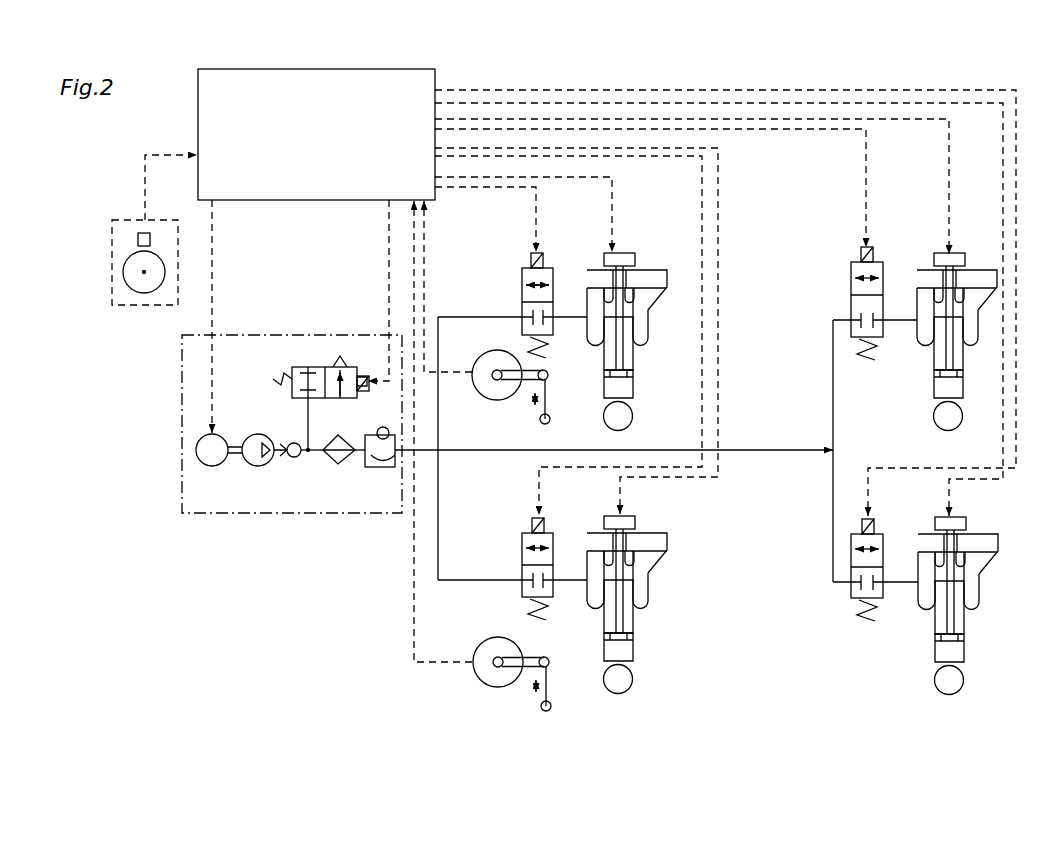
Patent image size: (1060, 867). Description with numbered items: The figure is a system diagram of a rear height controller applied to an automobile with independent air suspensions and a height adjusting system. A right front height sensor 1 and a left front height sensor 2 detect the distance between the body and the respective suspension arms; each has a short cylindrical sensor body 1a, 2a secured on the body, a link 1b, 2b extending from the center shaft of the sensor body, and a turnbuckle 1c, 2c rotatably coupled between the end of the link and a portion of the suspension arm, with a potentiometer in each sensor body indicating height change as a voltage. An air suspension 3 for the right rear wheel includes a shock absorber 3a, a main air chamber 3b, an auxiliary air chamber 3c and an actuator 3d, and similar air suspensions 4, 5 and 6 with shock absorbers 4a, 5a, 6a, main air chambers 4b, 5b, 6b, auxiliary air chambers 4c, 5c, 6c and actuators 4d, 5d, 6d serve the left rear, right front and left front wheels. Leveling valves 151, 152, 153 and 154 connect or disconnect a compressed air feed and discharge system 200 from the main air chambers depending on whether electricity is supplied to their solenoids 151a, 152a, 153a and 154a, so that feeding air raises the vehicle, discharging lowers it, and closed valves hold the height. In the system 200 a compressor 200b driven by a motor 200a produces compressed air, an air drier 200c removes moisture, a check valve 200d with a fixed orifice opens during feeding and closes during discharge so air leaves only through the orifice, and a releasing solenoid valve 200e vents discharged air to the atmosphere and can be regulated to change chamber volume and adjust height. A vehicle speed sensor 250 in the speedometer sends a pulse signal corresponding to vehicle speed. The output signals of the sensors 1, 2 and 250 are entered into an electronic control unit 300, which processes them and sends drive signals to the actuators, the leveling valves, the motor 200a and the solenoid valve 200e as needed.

The electronic control unit 300 is at (366, 72).
The vehicle speed sensor 250 is at (127, 222).
The compressed air feed and discharge system 200 is at (292, 448).
The motor 200a is at (212, 466).
The compressor 200b is at (258, 466).
The air drier 200c is at (330, 462).
The check valve 200d is at (392, 478).
The releasing solenoid valve 200e is at (302, 367).
The right front height sensor 1 is at (514, 385).
The sensor body 1a is at (480, 362).
The link 1b is at (509, 368).
The turnbuckle 1c is at (548, 401).
The left front height sensor 2 is at (523, 671).
The sensor body 2a is at (500, 644).
The link 2b is at (533, 658).
The turnbuckle 2c is at (552, 688).
The leveling valve 151 is at (861, 301).
The solenoid 151a is at (893, 266).
The leveling valve 152 is at (876, 535).
The solenoid 152a is at (862, 520).
The leveling valve 153 is at (534, 301).
The solenoid 153a is at (563, 265).
The leveling valve 154 is at (537, 564).
The solenoid 154a is at (562, 531).
The air suspension 3 is at (973, 336).
The shock absorber 3a is at (936, 388).
The main air chamber 3b is at (986, 332).
The auxiliary air chamber 3c is at (998, 280).
The actuator 3d is at (968, 262).
The air suspension 4 is at (969, 602).
The shock absorber 4a is at (969, 650).
The main air chamber 4b is at (987, 596).
The auxiliary air chamber 4c is at (998, 548).
The actuator 4d is at (969, 524).
The air suspension 5 is at (644, 337).
The shock absorber 5a is at (634, 381).
The main air chamber 5b is at (650, 313).
The auxiliary air chamber 5c is at (667, 280).
The actuator 5d is at (636, 259).
The air suspension 6 is at (649, 601).
The shock absorber 6a is at (634, 655).
The main air chamber 6b is at (652, 585).
The auxiliary air chamber 6c is at (668, 543).
The actuator 6d is at (638, 522).